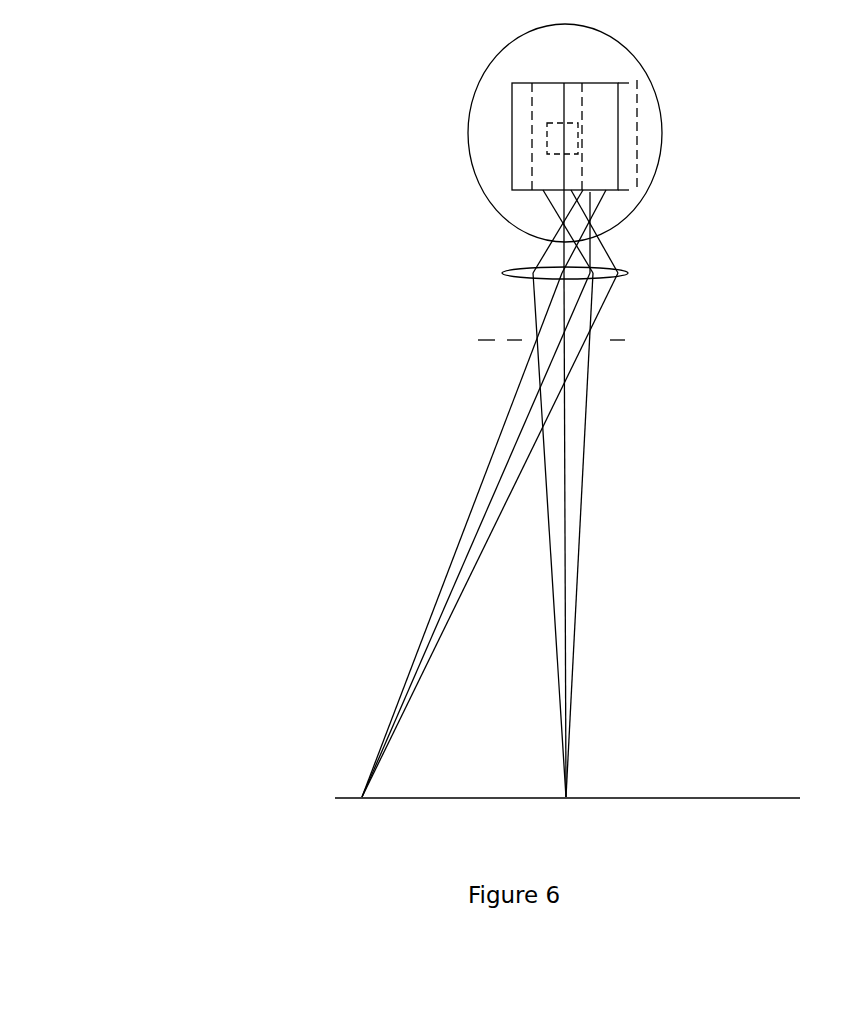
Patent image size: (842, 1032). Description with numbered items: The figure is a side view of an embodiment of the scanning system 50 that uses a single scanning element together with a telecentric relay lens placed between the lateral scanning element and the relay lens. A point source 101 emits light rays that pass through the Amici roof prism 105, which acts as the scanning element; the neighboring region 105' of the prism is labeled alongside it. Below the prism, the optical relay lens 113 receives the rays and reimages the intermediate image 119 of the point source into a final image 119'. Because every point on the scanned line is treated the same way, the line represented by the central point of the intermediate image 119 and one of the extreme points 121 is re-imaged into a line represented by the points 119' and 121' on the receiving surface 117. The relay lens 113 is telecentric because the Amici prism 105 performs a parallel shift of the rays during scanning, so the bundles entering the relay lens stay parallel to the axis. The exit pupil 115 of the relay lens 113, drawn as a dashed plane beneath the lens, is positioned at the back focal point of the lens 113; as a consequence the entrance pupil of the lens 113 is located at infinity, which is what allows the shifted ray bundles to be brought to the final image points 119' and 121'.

The scanning system 50 is at (248, 477).
The point source 101 is at (578, 147).
The Amici roof prism 105 is at (513, 146).
The display panel plane 105' is at (473, 136).
The optical relay lens 113 is at (503, 272).
The exit pupil 115 is at (478, 340).
The projection surface 117 is at (733, 798).
The intermediate image 119 is at (519, 231).
The final image 119' is at (600, 535).
The extreme point 121 is at (647, 231).
The re-imaged extreme point 121' is at (431, 535).